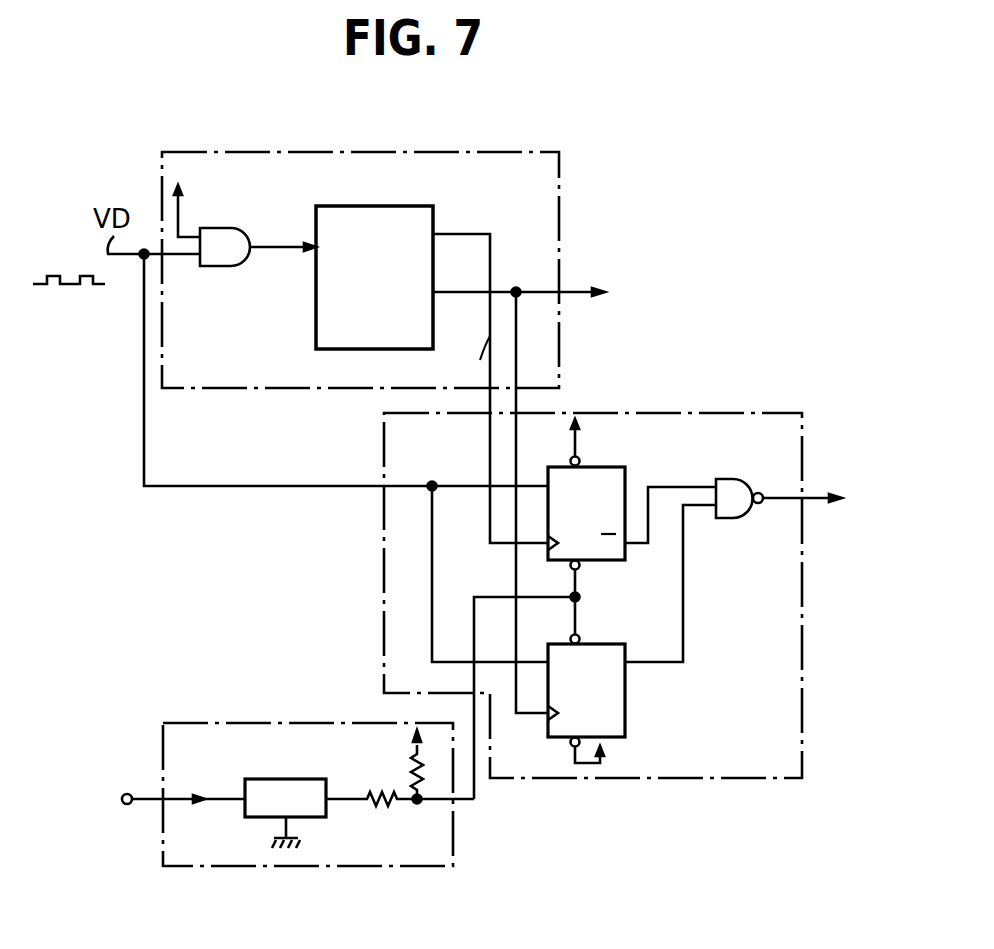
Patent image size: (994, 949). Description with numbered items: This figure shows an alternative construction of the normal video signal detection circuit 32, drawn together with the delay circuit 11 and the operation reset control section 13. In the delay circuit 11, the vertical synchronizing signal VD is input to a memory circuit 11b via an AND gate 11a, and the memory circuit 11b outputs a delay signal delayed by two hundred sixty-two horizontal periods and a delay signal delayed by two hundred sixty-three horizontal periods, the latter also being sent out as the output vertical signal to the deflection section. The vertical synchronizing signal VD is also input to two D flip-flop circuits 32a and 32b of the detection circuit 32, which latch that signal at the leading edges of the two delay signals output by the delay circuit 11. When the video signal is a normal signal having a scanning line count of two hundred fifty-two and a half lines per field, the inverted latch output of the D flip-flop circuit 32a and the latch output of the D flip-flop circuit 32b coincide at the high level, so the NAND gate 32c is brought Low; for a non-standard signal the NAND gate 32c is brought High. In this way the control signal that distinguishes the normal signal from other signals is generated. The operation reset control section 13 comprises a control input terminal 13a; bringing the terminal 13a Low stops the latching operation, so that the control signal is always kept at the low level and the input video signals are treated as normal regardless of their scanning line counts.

The delay circuit 11 is at (452, 151).
The AND gate 11a is at (224, 266).
The memory circuit 11b is at (316, 330).
The normal video signal detection circuit 32 is at (586, 412).
The D flip-flop circuit 32a is at (595, 467).
The D flip-flop circuit 32b is at (625, 700).
The NAND gate 32c is at (740, 520).
The operation reset control section 13 is at (455, 855).
The control input terminal 13a is at (124, 794).